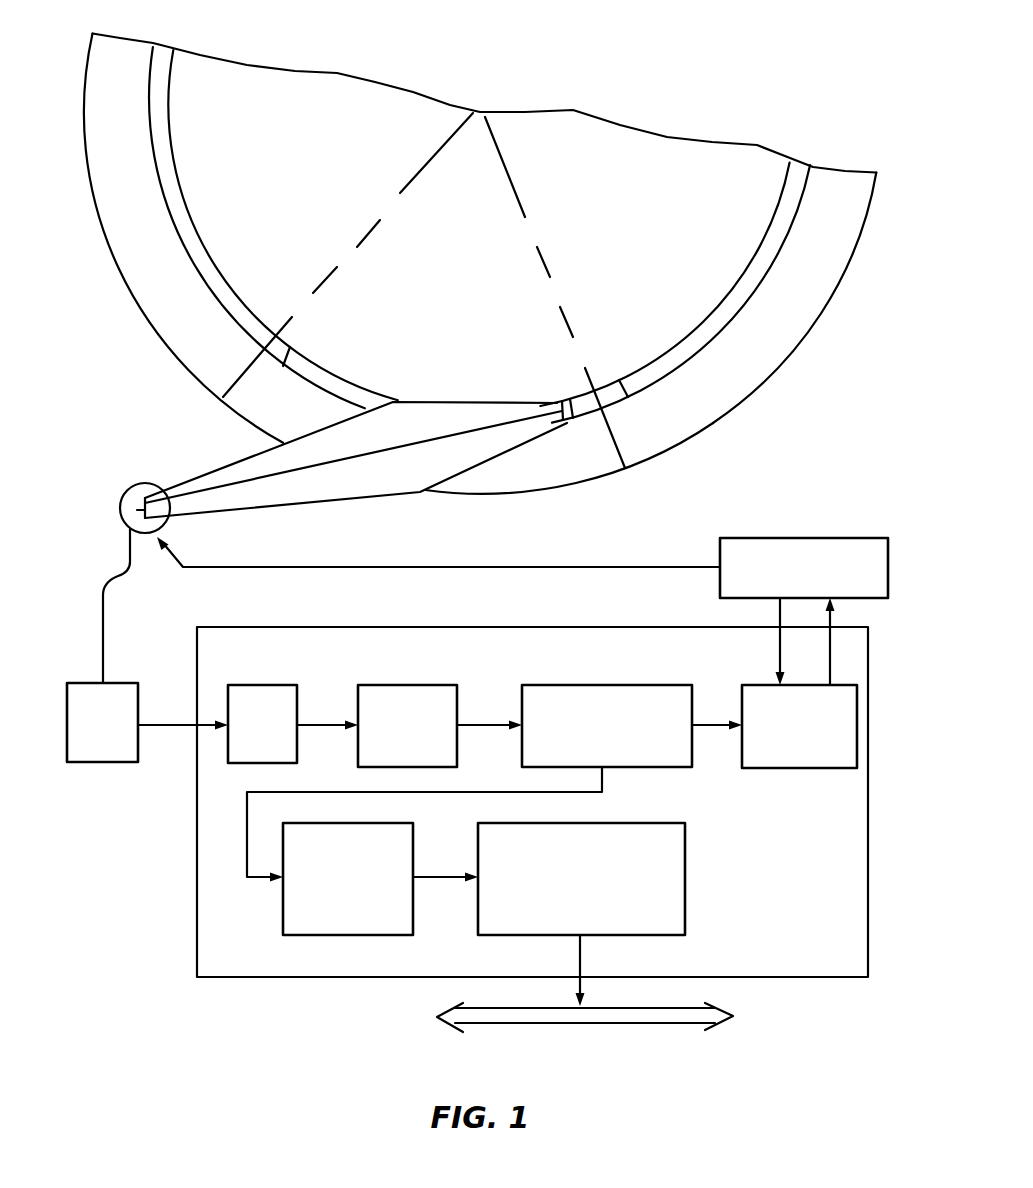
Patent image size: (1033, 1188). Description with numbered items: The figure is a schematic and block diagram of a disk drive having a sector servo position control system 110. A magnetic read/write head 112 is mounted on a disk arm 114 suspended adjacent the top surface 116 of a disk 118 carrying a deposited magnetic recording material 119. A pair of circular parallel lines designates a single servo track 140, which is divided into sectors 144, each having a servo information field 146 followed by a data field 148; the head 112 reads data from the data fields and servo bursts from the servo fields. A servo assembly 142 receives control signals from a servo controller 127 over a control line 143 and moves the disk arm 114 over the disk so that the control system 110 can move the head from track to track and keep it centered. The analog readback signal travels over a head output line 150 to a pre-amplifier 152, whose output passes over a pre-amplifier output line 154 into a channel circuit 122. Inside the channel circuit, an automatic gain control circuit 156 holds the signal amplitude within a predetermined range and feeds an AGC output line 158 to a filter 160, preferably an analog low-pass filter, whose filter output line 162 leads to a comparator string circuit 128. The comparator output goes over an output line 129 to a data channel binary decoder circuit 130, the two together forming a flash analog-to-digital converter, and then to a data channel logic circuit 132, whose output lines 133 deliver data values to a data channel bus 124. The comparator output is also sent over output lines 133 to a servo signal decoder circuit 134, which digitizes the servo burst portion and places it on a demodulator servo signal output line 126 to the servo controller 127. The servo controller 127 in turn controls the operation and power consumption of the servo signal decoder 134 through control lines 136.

The sector servo position control system 110 is at (84, 599).
The magnetic read/write head 112 is at (563, 398).
The disk arm 114 is at (437, 401).
The top surface 116 is at (509, 492).
The disk 118 is at (713, 427).
The magnetic recording material 119 is at (836, 238).
The channel circuit 122 is at (150, 836).
The data channel bus 124 is at (613, 1008).
The demodulator servo signal output line 126 is at (830, 662).
The servo controller 127 is at (806, 538).
The comparator string circuit 128 is at (645, 767).
The output line 129 is at (247, 842).
The data channel binary decoder circuit 130 is at (323, 935).
The data channel logic circuit 132 is at (685, 882).
The output lines 133 is at (707, 720).
The servo signal decoder circuit 134 is at (770, 768).
The control lines 136 is at (780, 617).
The servo track 140 is at (722, 301).
The servo assembly 142 is at (125, 493).
The control line 143 is at (294, 567).
The sectors 144 is at (482, 143).
The servo information field 146 is at (263, 347).
The data field 148 is at (302, 367).
The head output line 150 is at (117, 582).
The pre-amplifier 152 is at (77, 683).
The pre-amplifier output line 154 is at (173, 720).
The automatic gain control circuit 156 is at (253, 685).
The AGC output line 158 is at (318, 720).
The filter 160 is at (398, 685).
The filter output line 162 is at (472, 720).